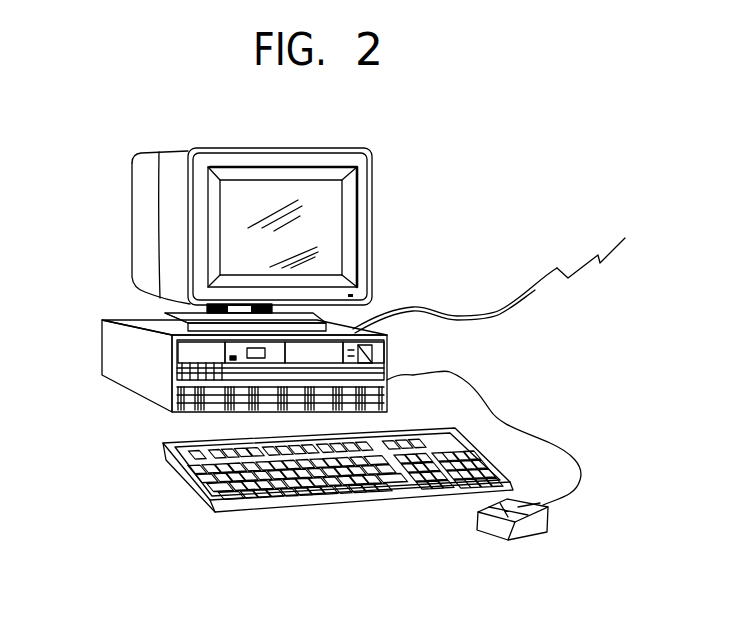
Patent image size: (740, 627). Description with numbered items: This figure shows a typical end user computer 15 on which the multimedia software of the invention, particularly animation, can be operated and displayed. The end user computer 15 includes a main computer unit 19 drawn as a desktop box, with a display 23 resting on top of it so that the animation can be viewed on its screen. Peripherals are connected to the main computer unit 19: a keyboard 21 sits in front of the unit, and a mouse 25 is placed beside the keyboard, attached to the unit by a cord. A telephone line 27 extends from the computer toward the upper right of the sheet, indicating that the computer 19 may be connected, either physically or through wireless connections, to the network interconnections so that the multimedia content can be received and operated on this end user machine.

The end user computer 15 is at (457, 139).
The main computer unit 19 is at (135, 395).
The keyboard 21 is at (298, 506).
The display 23 is at (327, 215).
The mouse 25 is at (552, 518).
The telephone line 27 is at (438, 310).